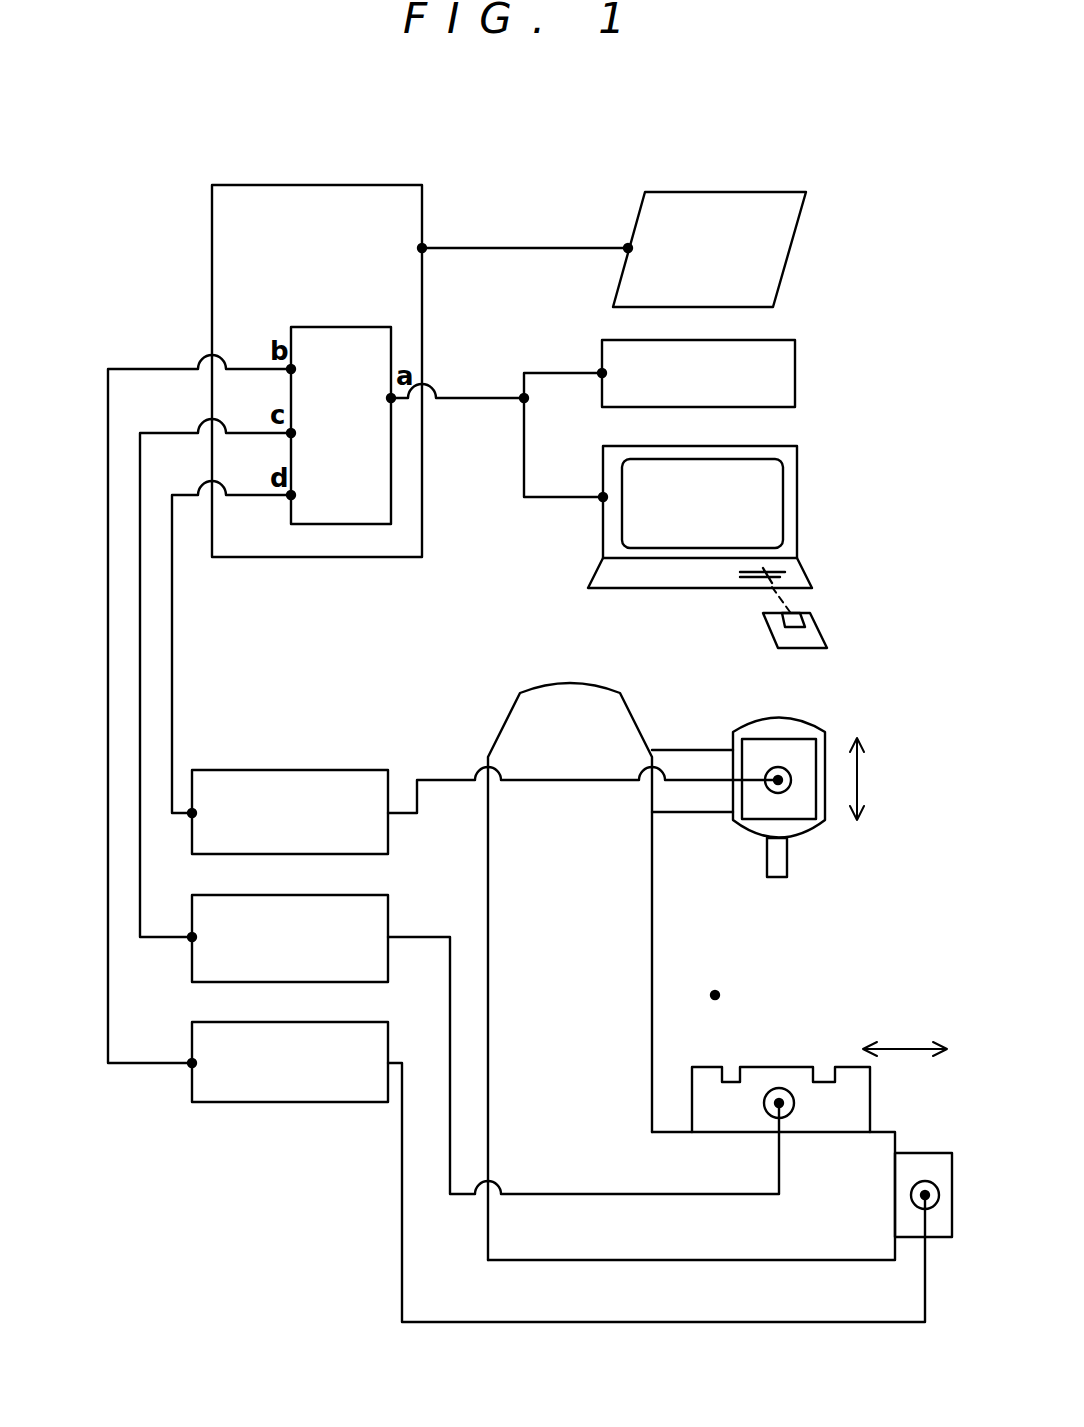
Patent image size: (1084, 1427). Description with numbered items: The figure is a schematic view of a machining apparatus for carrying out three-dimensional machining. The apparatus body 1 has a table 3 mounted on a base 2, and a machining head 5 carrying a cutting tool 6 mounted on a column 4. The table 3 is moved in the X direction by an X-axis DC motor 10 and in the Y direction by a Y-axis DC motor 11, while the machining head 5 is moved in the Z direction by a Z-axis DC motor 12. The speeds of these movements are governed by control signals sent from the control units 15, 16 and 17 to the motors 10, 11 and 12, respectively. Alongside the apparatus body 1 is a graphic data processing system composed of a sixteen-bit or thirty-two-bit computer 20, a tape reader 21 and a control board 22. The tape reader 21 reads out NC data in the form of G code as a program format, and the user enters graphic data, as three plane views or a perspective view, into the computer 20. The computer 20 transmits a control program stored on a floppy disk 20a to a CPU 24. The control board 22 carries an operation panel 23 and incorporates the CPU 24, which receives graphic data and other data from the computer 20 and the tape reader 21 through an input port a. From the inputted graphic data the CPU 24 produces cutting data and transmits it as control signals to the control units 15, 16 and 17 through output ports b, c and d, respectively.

The apparatus body 1 is at (703, 668).
The base 2 is at (650, 1252).
The table 3 is at (870, 1100).
The column 4 is at (652, 888).
The machining head 5 is at (796, 720).
The cutting tool 6 is at (787, 866).
The X-axis DC motor 10 is at (768, 1067).
The Y-axis DC motor 11 is at (908, 1176).
The Z-axis DC motor 12 is at (757, 748).
The control unit 15 is at (362, 895).
The control unit 16 is at (360, 1022).
The control unit 17 is at (316, 770).
The computer 20 is at (600, 515).
The floppy disk 20a is at (808, 637).
The tape reader 21 is at (602, 358).
The control board 22 is at (333, 185).
The operation panel 23 is at (703, 192).
The CPU 24 is at (345, 524).